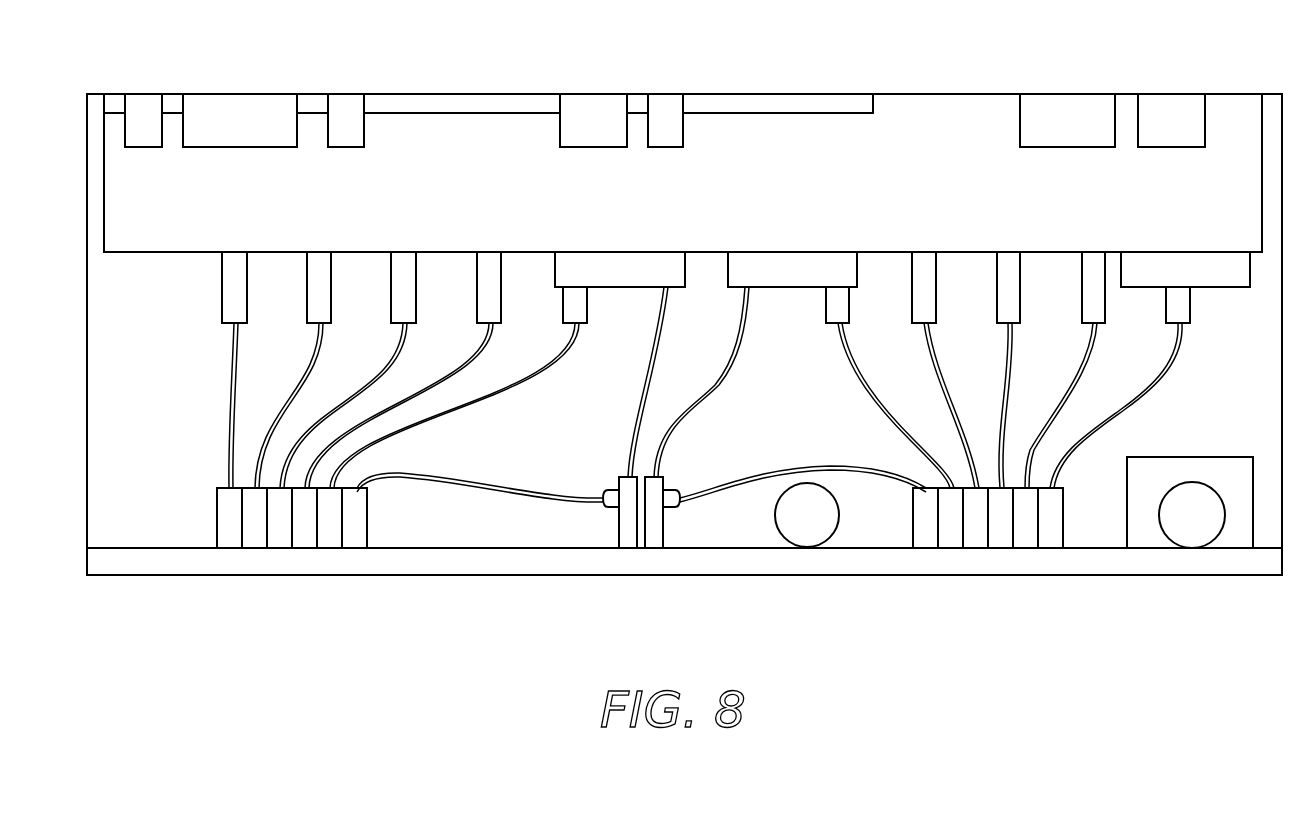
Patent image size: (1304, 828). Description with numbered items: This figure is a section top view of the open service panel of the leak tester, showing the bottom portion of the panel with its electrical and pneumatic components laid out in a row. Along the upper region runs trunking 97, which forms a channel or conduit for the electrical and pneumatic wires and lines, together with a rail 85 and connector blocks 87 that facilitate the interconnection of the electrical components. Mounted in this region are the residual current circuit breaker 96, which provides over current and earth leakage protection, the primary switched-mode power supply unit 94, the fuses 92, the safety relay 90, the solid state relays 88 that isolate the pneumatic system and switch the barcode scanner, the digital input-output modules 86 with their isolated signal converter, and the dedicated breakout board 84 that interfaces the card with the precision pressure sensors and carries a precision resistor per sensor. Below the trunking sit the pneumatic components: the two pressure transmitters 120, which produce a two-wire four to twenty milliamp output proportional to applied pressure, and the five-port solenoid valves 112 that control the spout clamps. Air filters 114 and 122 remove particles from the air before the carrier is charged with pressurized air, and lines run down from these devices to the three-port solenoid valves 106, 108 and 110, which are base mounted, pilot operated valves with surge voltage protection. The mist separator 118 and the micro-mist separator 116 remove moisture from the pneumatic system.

The dedicated breakout board 84 is at (1155, 100).
The rail 85 is at (462, 99).
The digital input-output modules 86 is at (1066, 100).
The connector blocks 87 is at (780, 100).
The solid state relays 88 is at (660, 100).
The safety relay 90 is at (580, 100).
The fuses 92 is at (347, 100).
The primary switched-mode power supply unit 94 is at (237, 100).
The residual current circuit breaker 96 is at (137, 99).
The trunking 97 is at (118, 192).
The 3-port solenoid valve 106 is at (330, 528).
The 3-port solenoid valve 108 is at (657, 528).
The 3-port solenoid valve 110 is at (1004, 528).
The 5-port solenoid valves 112 is at (1161, 258).
The air filter 114 is at (1181, 314).
The micro-mist separator 116 is at (1192, 528).
The mist separator 118 is at (810, 528).
The pressure transmitters 120 is at (620, 258).
The air filter 122 is at (231, 290).